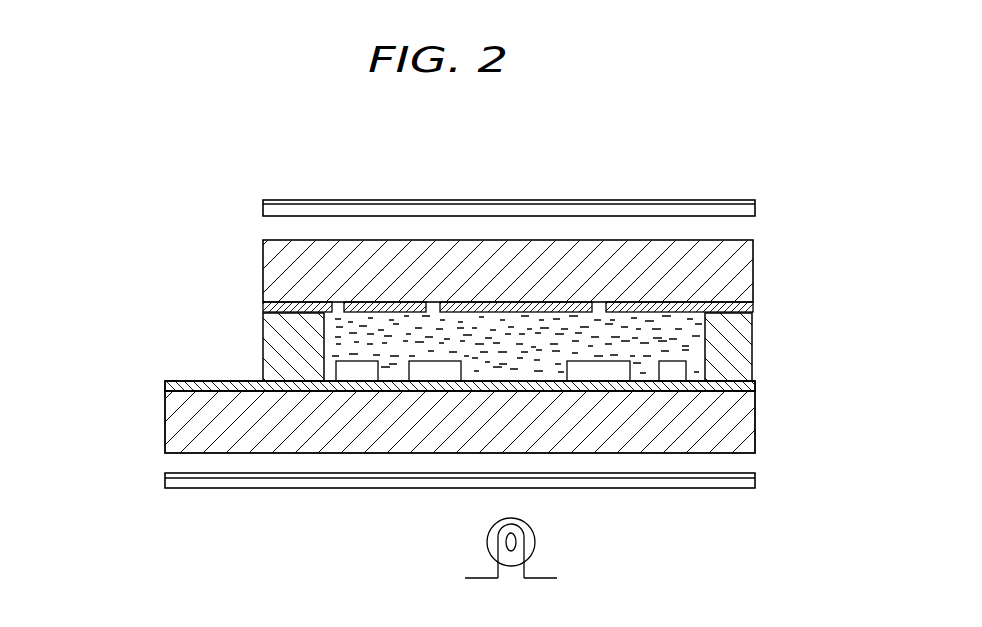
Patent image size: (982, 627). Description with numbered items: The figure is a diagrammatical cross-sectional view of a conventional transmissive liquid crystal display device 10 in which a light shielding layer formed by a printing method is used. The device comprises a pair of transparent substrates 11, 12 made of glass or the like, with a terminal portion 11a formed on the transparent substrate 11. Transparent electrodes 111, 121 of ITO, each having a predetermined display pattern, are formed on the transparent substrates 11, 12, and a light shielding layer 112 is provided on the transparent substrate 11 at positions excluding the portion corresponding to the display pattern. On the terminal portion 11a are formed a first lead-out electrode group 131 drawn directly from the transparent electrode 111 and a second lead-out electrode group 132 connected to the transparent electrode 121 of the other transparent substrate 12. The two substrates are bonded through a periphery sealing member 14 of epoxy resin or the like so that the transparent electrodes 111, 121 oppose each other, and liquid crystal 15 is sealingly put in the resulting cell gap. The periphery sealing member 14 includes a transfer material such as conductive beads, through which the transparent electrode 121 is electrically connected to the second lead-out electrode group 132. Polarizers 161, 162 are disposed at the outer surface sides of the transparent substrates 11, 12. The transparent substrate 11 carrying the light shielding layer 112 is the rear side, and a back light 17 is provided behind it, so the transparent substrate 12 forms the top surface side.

The liquid crystal display device 10 is at (765, 222).
The transparent substrate 11 is at (457, 426).
The terminal portion 11a is at (178, 427).
The transparent electrode 111 is at (745, 389).
The light shielding layer 112 is at (340, 370).
The transparent substrate 12 is at (744, 268).
The transparent electrode 121 is at (745, 307).
The first lead-out electrode group 131 is at (165, 386).
The second lead-out electrode group 132 is at (165, 386).
The periphery sealing member 14 is at (290, 322).
The liquid crystal 15 is at (693, 368).
The polarizer 161 is at (365, 489).
The polarizer 162 is at (300, 200).
The back light 17 is at (535, 541).